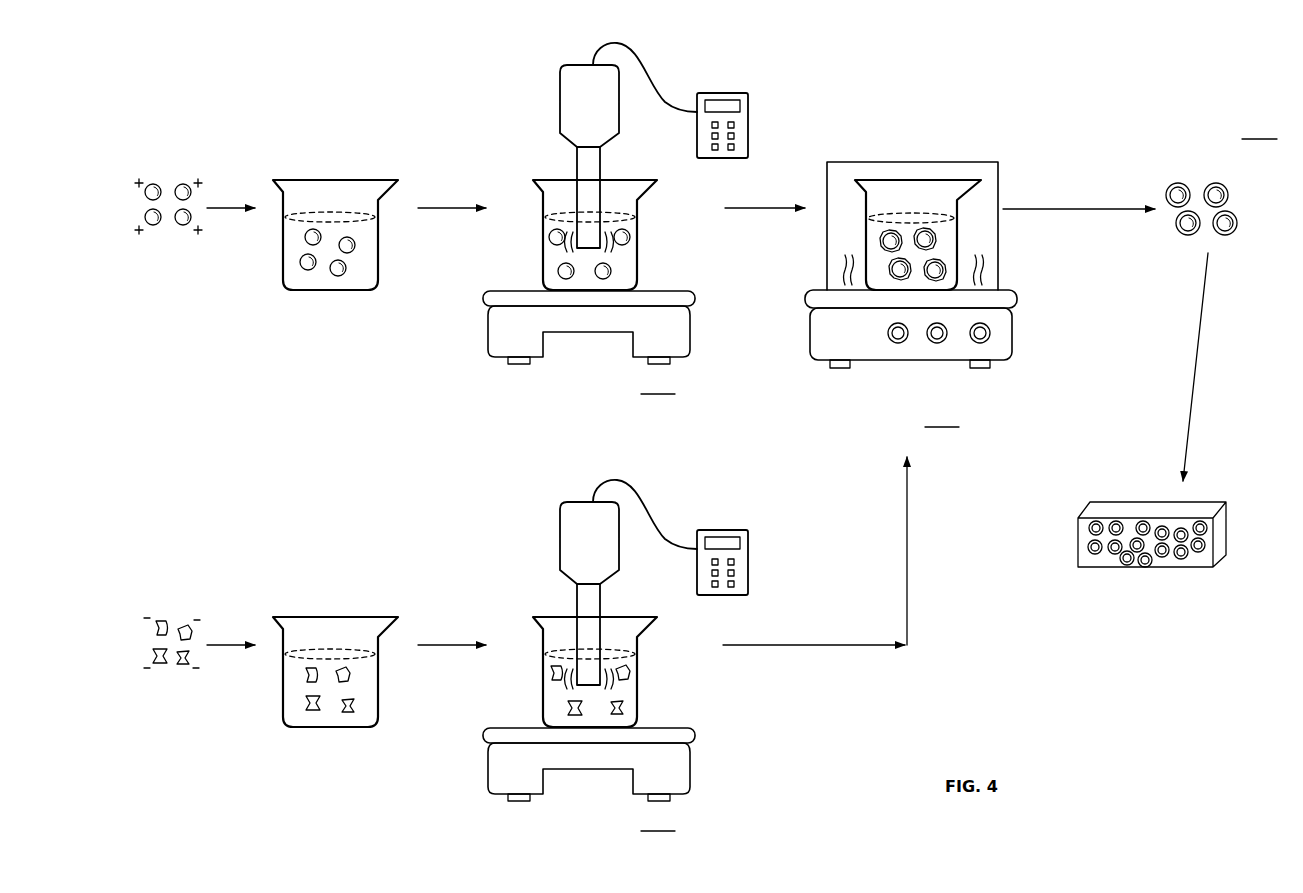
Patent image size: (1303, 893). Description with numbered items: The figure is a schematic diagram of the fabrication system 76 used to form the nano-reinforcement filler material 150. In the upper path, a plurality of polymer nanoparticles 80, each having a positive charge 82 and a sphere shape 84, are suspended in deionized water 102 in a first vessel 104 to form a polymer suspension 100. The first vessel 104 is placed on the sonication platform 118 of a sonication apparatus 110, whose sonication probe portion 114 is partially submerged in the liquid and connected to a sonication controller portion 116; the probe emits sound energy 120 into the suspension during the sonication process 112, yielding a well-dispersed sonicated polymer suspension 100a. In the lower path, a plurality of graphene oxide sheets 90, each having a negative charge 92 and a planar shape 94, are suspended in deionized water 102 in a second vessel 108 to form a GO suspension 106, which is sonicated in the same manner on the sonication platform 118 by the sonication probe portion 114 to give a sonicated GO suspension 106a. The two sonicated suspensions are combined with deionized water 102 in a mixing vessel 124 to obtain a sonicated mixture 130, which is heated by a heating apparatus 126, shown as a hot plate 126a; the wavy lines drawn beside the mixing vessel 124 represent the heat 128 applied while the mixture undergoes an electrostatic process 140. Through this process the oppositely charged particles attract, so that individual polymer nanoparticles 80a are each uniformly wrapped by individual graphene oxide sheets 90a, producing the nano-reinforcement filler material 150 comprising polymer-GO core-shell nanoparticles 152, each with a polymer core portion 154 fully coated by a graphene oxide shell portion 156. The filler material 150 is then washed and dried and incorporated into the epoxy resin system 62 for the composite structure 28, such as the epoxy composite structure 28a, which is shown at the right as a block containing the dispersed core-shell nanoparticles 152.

The fabrication system 76 is at (943, 56).
The polymer nanoparticles 80 is at (169, 170).
The positive charge 82 is at (204, 233).
The sphere shape 84 is at (185, 184).
The graphene oxide (GO) sheets 90 is at (176, 674).
The negative charge 92 is at (198, 614).
The planar shape 94 is at (163, 618).
The polymer suspension 100 is at (311, 274).
The sonicated polymer suspension 100a is at (548, 251).
The deionized (DI) water 102 is at (368, 258).
The first vessel 104 is at (364, 180).
The graphene oxide (GO) suspension 106 is at (298, 702).
The sonicated GO suspension 106a is at (548, 688).
The second vessel 108 is at (364, 617).
The sonication apparatus 110 is at (543, 90).
The sonication process 112 is at (591, 603).
The sonication probe portion 114 is at (596, 165).
The sonication controller portion 116 is at (719, 93).
The sonication platform 118 is at (680, 328).
The sound energy 120 is at (610, 249).
The mixing vessel 124 is at (962, 190).
The heating apparatus 126 is at (849, 152).
The hot plate 126a is at (1012, 300).
The heat 128 is at (842, 267).
The sonicated mixture 130 is at (870, 233).
The electrostatic process 140 is at (905, 405).
The nano-reinforcement filler material 150 is at (1217, 544).
The polymer-GO core-shell nanoparticles 152 is at (1233, 212).
The polymer core portion 154 is at (1175, 185).
The graphene oxide (GO) shell portion 156 is at (1174, 225).
The composite structure 28 is at (1073, 511).
The epoxy composite structure 28a is at (1078, 524).
The epoxy resin system 62 is at (1098, 561).
The individual polymer nanoparticles 80a is at (886, 243).
The individual graphene oxide (GO) sheets 90a is at (938, 258).